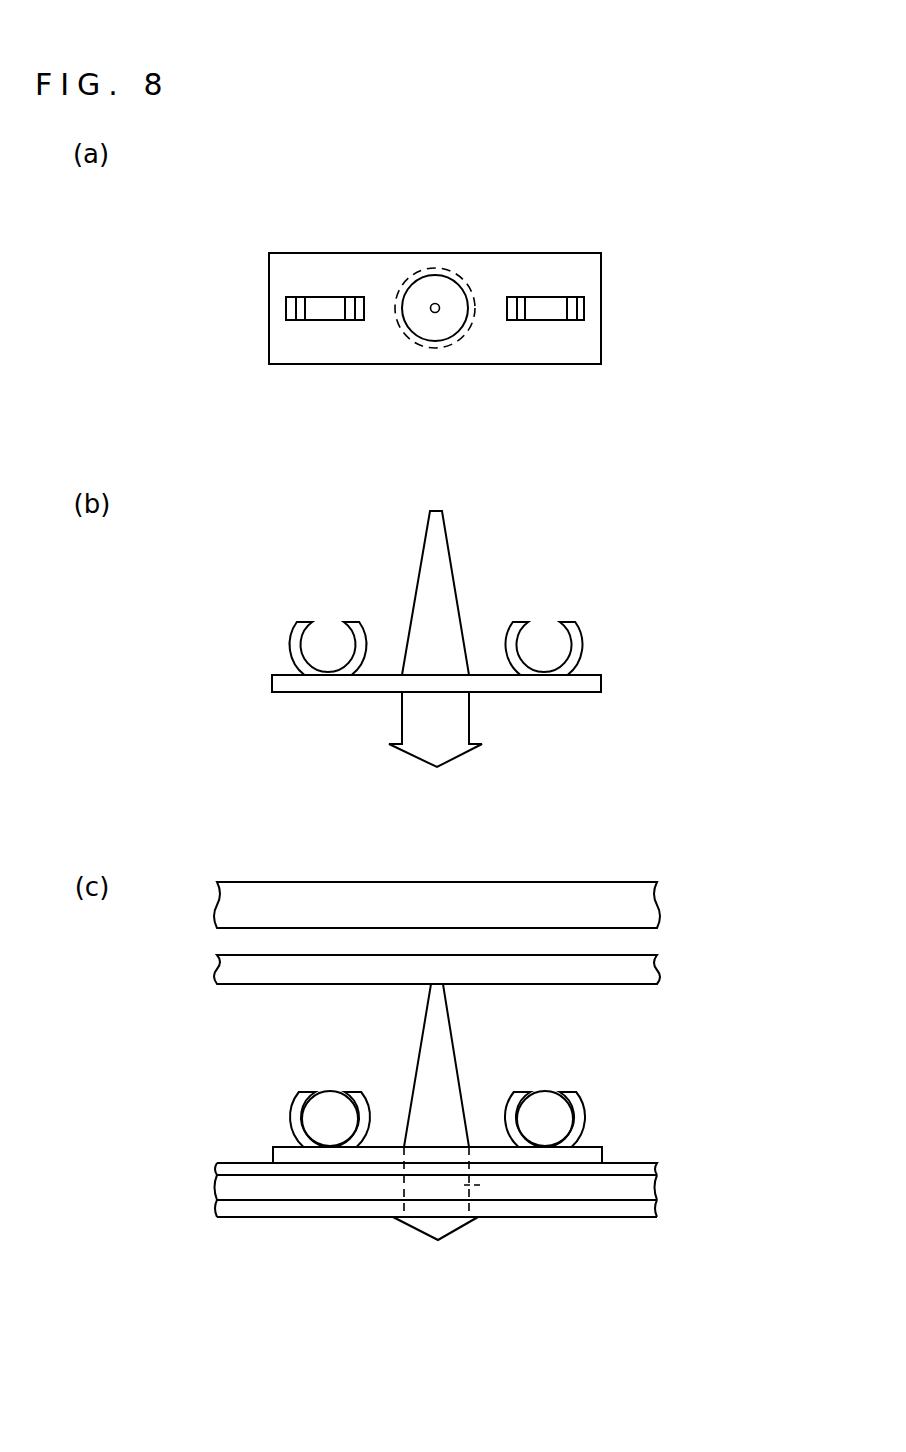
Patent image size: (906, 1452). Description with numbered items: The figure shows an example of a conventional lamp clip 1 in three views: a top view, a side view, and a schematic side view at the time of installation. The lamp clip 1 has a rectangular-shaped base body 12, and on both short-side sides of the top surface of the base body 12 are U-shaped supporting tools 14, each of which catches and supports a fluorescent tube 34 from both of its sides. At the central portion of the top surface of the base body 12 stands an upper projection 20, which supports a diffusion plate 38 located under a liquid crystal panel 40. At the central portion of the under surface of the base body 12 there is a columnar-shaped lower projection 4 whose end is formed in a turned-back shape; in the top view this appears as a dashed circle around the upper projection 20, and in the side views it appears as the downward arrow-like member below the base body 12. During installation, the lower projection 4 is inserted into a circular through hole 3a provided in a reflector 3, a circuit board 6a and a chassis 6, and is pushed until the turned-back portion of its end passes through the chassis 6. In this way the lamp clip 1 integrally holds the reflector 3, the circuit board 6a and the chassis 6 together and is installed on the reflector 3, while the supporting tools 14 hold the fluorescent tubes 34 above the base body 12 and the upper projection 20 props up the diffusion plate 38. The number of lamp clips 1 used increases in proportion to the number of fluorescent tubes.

The lamp clip 1 is at (296, 236).
The reflector 3 is at (622, 1165).
The circular through hole 3a is at (452, 1189).
The lower projection 4 is at (457, 342).
The chassis 6 is at (640, 1208).
The circuit board 6a is at (633, 1187).
The base body 12 is at (568, 267).
The U-shaped supporting tool 14 is at (286, 305).
The upper projection 20 is at (448, 290).
The fluorescent tube 34 is at (328, 1102).
The diffusion plate 38 is at (632, 968).
The liquid crystal panel 40 is at (630, 908).